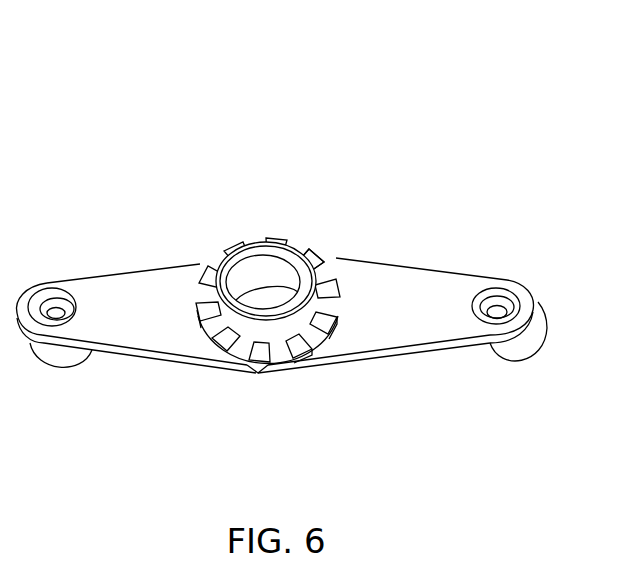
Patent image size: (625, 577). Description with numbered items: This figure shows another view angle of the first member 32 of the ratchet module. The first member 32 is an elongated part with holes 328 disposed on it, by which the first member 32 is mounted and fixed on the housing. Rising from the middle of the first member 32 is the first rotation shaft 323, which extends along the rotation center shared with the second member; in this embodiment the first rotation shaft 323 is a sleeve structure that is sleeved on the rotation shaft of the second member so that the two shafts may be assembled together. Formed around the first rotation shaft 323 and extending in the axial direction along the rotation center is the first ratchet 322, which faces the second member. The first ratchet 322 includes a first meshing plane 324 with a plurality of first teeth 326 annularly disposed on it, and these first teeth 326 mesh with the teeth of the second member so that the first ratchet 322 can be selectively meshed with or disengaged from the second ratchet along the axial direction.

The first member 32 is at (467, 93).
The first ratchet 322 is at (273, 378).
The first rotation shaft 323 is at (265, 272).
The first meshing plane 324 is at (223, 251).
The first teeth 326 is at (318, 264).
The holes 328 is at (56, 313).